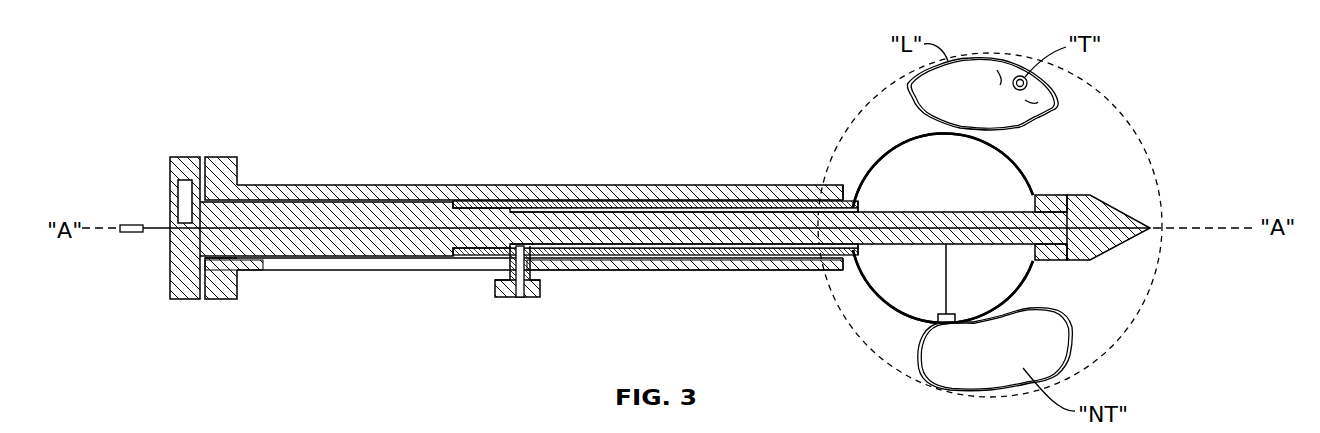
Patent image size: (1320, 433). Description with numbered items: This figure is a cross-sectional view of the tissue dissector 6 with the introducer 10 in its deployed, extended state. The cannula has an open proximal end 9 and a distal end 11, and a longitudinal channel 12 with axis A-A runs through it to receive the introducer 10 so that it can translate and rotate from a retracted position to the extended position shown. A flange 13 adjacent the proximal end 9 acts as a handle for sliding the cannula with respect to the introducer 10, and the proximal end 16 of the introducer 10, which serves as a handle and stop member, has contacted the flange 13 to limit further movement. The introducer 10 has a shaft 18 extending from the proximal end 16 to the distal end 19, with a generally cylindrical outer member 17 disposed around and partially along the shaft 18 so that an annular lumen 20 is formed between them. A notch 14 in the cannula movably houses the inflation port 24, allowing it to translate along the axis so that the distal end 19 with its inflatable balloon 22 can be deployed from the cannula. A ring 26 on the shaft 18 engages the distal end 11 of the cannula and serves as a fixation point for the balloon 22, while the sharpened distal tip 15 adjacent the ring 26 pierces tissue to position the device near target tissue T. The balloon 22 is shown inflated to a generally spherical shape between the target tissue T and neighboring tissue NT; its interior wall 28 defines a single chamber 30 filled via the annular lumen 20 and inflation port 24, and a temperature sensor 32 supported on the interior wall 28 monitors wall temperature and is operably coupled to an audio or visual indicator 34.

The tissue dissector 6 is at (448, 120).
The open proximal end 9 is at (240, 185).
The introducer 10 is at (312, 206).
The distal end 11 is at (838, 186).
The longitudinal channel 12 is at (851, 191).
The flange 13 is at (232, 157).
The notch 14 is at (372, 286).
The distal tip 15 is at (1140, 238).
The proximal end 16 is at (178, 157).
The outer member 17 is at (485, 202).
The shaft 18 is at (573, 214).
The distal end 19 is at (1047, 204).
The annular lumen 20 is at (866, 207).
The inflatable balloon 22 is at (1031, 172).
The inflation port 24 is at (540, 289).
The ring 26 is at (1053, 258).
The interior wall 28 is at (1001, 142).
The chamber 30 is at (889, 270).
The temperature sensor 32 is at (950, 310).
The audio or visual indicator 34 is at (175, 207).